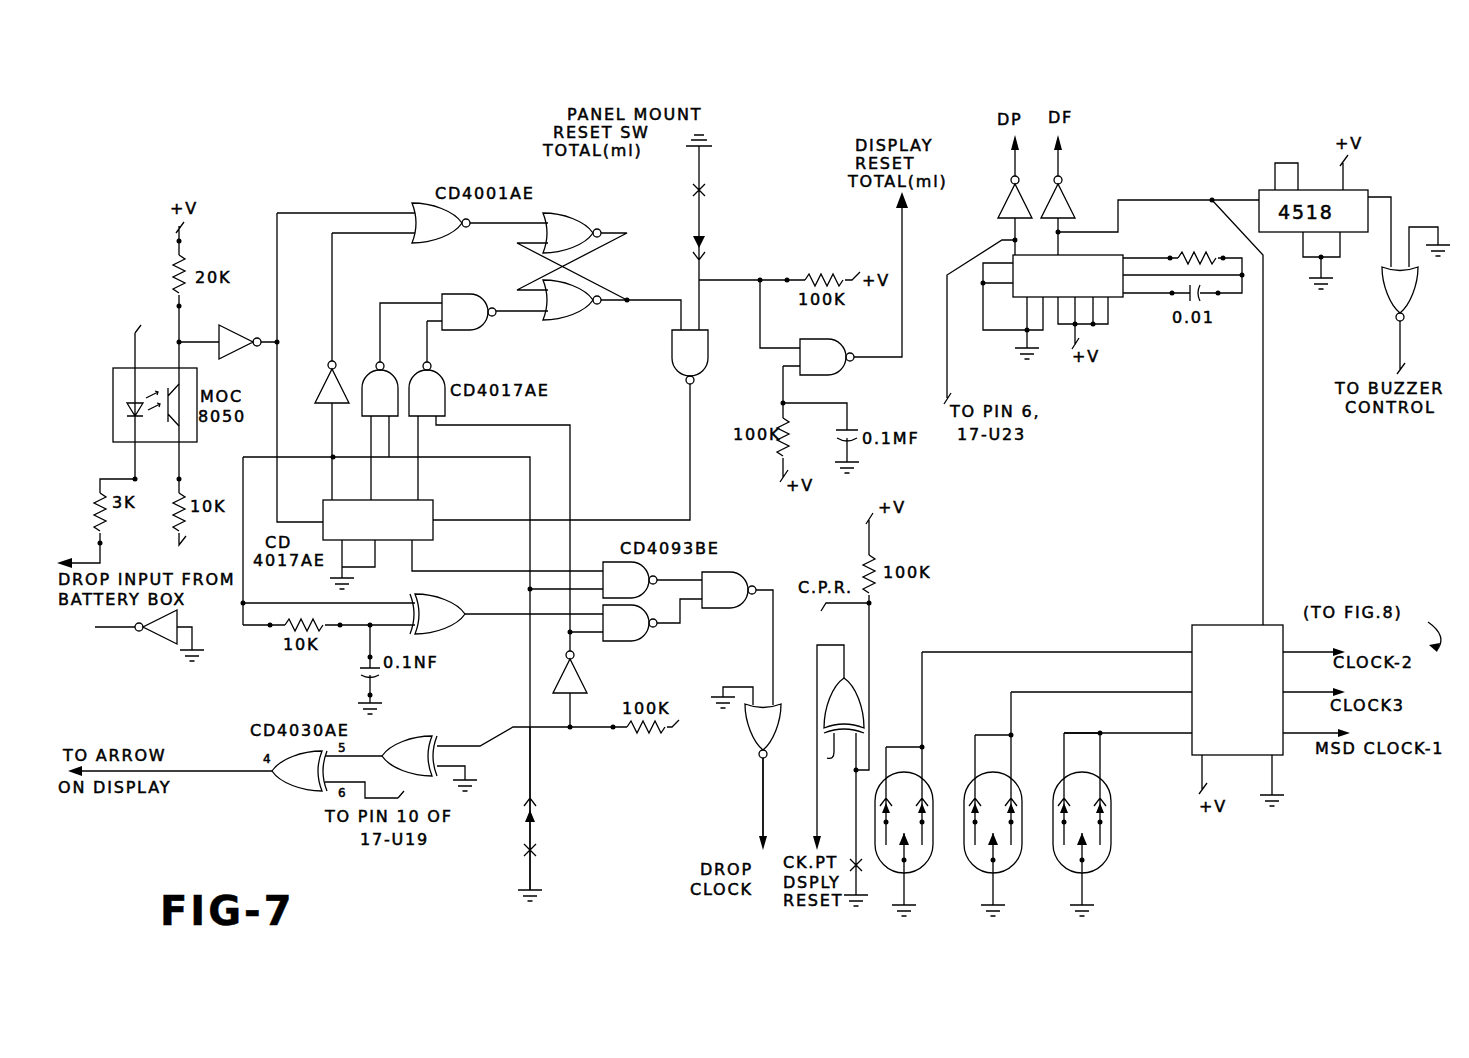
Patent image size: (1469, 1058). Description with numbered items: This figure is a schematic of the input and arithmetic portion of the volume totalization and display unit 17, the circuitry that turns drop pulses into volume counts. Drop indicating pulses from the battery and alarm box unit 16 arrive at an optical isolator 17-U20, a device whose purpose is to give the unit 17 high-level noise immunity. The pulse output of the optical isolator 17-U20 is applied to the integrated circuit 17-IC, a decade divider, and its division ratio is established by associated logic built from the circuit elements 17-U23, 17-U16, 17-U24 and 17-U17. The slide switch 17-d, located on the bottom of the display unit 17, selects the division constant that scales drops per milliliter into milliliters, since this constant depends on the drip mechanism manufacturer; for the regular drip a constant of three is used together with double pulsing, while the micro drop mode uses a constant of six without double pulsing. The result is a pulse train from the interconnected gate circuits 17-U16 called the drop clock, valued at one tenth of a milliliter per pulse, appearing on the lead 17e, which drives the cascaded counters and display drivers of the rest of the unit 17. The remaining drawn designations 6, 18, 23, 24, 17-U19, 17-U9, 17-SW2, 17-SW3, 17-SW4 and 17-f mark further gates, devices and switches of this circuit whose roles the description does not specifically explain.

The NOR gate (buzzer control) 6 is at (1400, 294).
The battery and alarm box unit 16 is at (596, 480).
The volume totalization and display unit 17 is at (679, 490).
The inverter 18 is at (605, 434).
The CD4030AE exclusive-OR gate 23 is at (568, 692).
The NAND gate 24 is at (608, 355).
The optical isolator 17-U20 is at (128, 402).
The interconnected set of gate circuits 17-U16 is at (526, 266).
The circuit element of the division logic 17-U24 is at (477, 327).
The integrated circuit 17-IC is at (417, 500).
The circuit element of the division logic 17-U17 is at (679, 606).
The circuit element of the division logic 17-U23 is at (354, 763).
The 4047BF multivibrator 17-U19 is at (1118, 299).
The MC14490 contact bounce eliminator 17-U9 is at (1192, 678).
The switch 2 17-SW2 is at (924, 831).
The switch 3 17-SW3 is at (1012, 825).
The switch 4 17-SW4 is at (1107, 824).
The panel mount reset switch line 17-f is at (674, 238).
The slide switch 17-d is at (535, 826).
The drop clock lead 17e is at (763, 814).